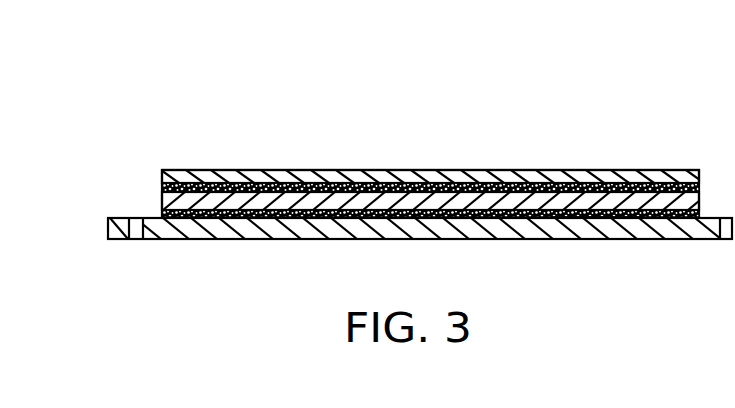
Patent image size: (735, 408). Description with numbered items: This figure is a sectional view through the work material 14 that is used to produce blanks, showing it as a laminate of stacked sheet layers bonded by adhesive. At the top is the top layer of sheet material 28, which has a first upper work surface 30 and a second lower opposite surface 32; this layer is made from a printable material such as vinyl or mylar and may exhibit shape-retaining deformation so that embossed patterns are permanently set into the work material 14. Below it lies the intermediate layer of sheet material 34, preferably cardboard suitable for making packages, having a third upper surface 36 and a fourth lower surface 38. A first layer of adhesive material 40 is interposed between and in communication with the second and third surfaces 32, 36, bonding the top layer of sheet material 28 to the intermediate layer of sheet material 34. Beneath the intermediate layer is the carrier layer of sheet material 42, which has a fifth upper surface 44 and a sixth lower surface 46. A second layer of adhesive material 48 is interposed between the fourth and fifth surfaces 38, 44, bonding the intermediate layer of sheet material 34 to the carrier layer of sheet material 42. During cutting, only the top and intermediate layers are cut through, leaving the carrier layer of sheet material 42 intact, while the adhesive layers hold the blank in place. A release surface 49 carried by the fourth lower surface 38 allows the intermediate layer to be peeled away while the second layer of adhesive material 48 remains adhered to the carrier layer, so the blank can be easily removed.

The work material 14 is at (199, 128).
The top layer of sheet material 28 is at (343, 178).
The first upper work surface 30 is at (478, 169).
The second lower opposite surface 32 is at (417, 184).
The intermediate layer of sheet material 34 is at (570, 198).
The third upper surface 36 is at (667, 183).
The fourth lower surface 38 is at (536, 188).
The first layer of adhesive material 40 is at (273, 177).
The carrier layer of sheet material 42 is at (477, 232).
The fifth upper surface 44 is at (406, 201).
The sixth lower surface 46 is at (307, 240).
The second layer of adhesive material 48 is at (205, 218).
The release surface 49 is at (592, 207).